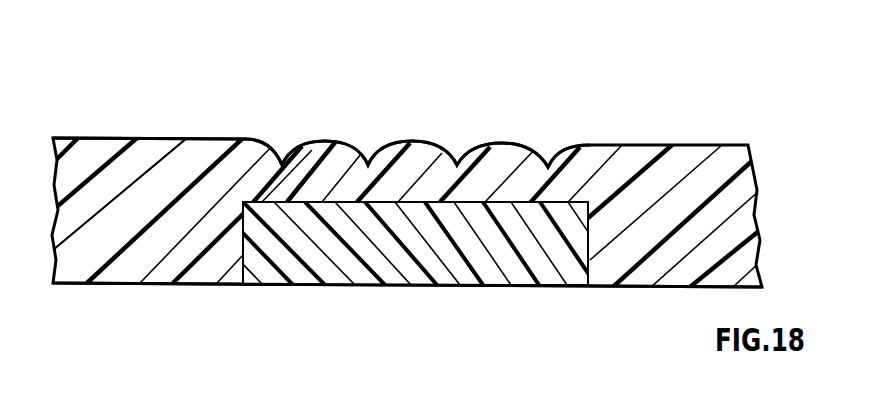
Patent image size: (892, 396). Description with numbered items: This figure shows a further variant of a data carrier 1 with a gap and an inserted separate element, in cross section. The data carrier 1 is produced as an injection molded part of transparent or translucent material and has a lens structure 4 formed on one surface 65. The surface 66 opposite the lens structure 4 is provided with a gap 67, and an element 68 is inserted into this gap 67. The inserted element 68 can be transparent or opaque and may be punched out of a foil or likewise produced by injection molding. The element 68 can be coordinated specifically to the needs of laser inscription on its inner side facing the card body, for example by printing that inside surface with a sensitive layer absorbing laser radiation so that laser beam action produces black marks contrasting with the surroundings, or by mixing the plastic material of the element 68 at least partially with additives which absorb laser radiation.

The data carrier 1 is at (84, 254).
The lens structure 4 is at (341, 142).
The surface 65 is at (103, 138).
The surface 66 is at (632, 289).
The gap 67 is at (240, 247).
The element 68 is at (414, 272).